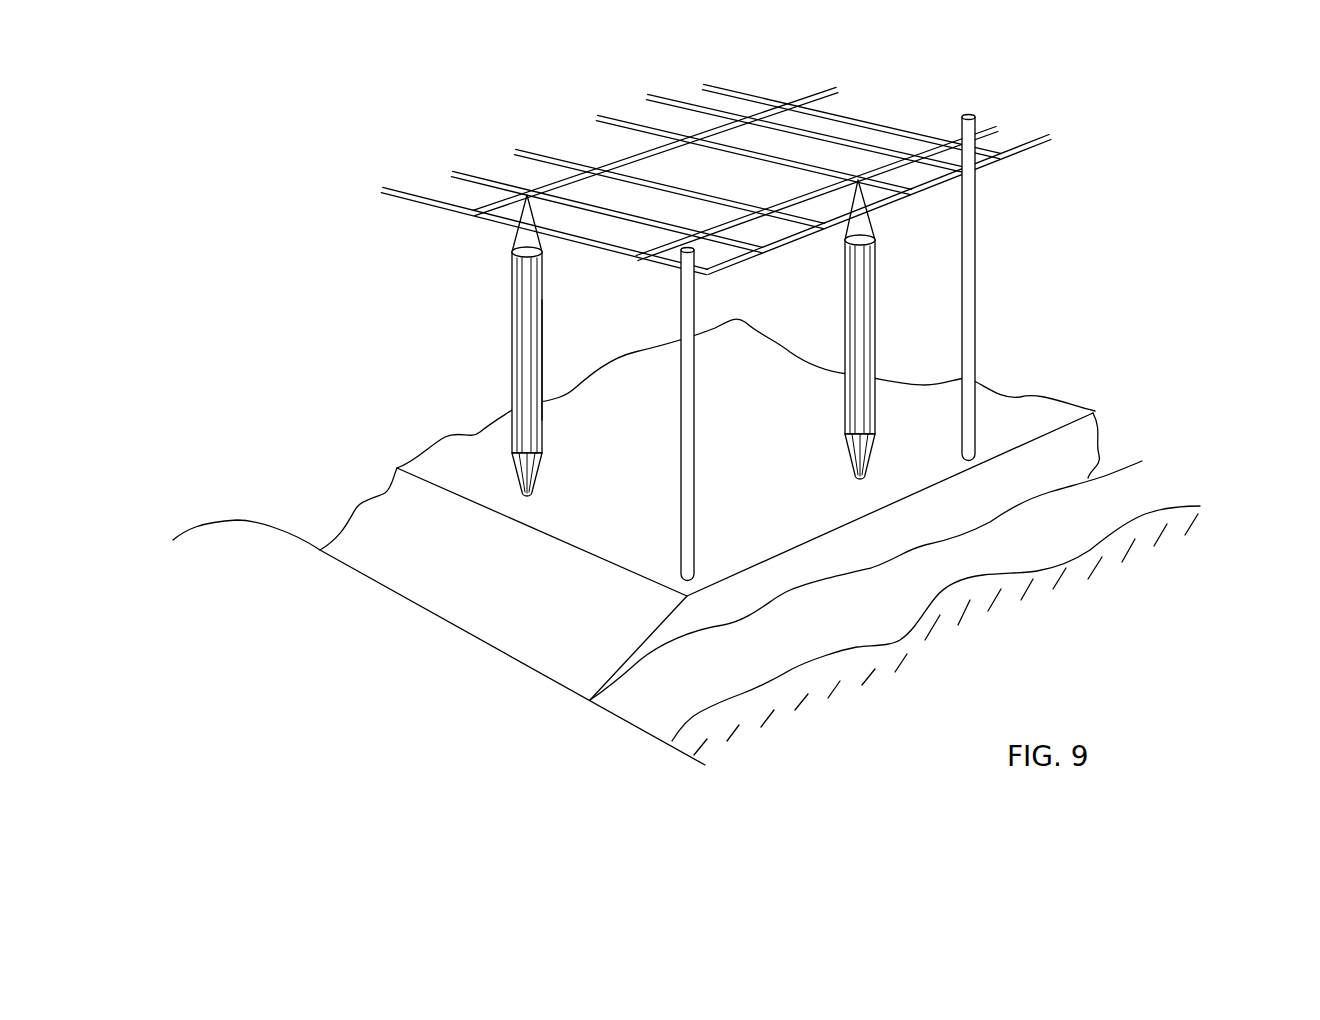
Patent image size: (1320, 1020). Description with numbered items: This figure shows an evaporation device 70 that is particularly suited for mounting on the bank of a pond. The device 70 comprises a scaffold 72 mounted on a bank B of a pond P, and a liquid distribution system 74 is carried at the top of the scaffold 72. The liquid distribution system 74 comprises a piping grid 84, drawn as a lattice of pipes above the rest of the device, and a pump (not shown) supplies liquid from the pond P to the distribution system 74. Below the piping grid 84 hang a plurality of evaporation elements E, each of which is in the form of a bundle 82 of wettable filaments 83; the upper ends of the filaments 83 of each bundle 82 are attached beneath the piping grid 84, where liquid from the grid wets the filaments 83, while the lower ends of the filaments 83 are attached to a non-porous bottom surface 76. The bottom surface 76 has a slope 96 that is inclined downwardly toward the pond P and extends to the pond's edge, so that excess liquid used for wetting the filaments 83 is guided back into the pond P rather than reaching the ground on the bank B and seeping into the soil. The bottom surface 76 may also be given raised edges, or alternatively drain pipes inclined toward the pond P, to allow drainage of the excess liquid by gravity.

The evaporation device 70 is at (1093, 166).
The scaffold 72 is at (968, 252).
The liquid distribution system 74 is at (716, 159).
The non-porous bottom surface 76 is at (1030, 420).
The bundle 82 is at (528, 362).
The wettable filaments 83 is at (543, 353).
The piping grid 84 is at (683, 140).
The slope 96 is at (500, 600).
The evaporation element E is at (865, 330).
The bank B is at (1147, 492).
The pond P is at (411, 678).